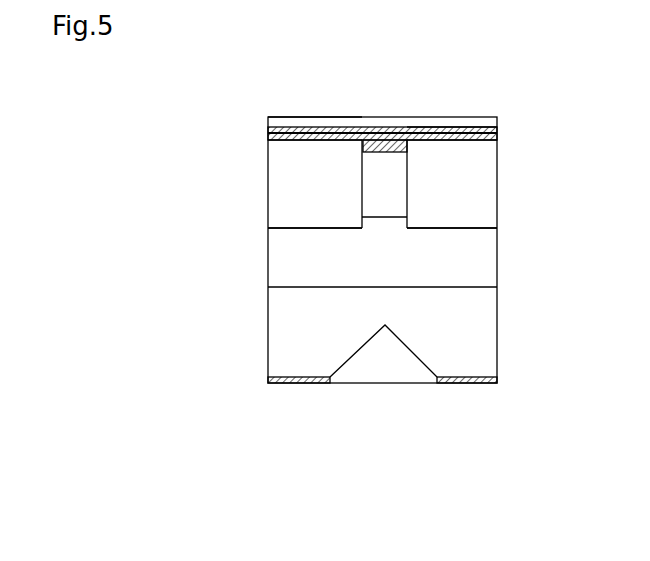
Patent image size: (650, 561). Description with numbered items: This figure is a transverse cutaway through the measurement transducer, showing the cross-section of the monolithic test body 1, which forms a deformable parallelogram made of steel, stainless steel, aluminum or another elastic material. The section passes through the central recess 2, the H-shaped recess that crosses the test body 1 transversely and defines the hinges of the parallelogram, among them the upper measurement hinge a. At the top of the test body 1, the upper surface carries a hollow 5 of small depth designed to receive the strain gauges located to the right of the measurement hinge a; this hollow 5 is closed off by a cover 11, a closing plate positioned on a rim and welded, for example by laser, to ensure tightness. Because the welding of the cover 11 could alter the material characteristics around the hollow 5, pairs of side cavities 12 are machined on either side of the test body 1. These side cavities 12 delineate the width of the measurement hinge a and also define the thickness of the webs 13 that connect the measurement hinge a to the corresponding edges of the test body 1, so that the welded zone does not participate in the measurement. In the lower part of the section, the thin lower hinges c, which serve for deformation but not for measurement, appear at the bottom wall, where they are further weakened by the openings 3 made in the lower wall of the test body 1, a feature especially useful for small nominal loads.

The test body 1 is at (497, 133).
The central recess 2 is at (380, 178).
The opening 3 is at (380, 370).
The hollow 5 is at (440, 136).
The cover 11 is at (322, 130).
The side cavity 12 is at (328, 203).
The web 13 is at (328, 143).
The measurement hinge a is at (393, 140).
The lower hinge c is at (300, 383).